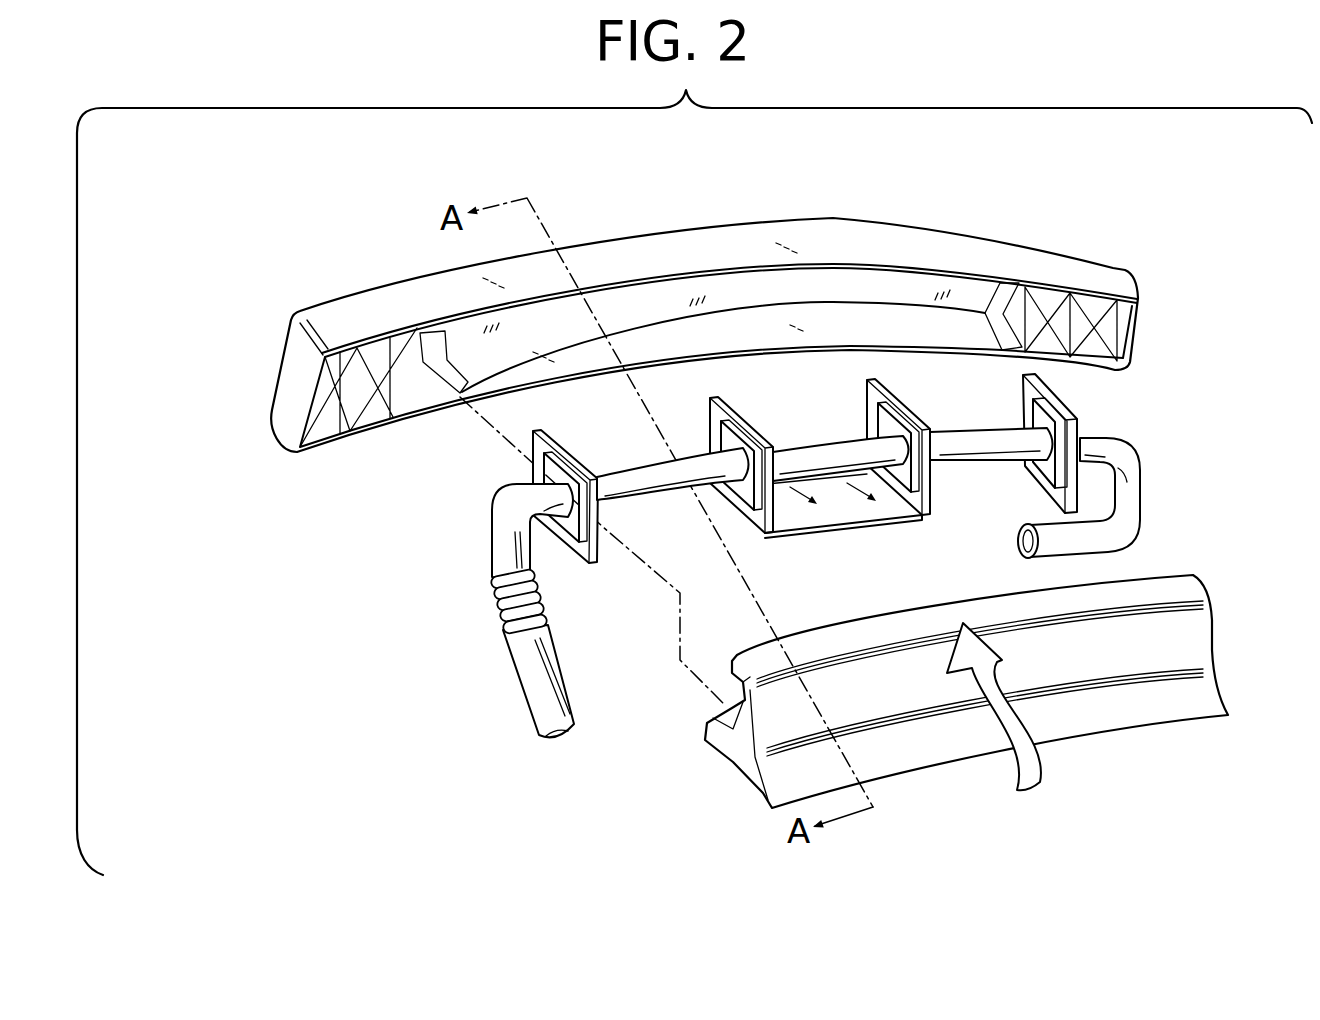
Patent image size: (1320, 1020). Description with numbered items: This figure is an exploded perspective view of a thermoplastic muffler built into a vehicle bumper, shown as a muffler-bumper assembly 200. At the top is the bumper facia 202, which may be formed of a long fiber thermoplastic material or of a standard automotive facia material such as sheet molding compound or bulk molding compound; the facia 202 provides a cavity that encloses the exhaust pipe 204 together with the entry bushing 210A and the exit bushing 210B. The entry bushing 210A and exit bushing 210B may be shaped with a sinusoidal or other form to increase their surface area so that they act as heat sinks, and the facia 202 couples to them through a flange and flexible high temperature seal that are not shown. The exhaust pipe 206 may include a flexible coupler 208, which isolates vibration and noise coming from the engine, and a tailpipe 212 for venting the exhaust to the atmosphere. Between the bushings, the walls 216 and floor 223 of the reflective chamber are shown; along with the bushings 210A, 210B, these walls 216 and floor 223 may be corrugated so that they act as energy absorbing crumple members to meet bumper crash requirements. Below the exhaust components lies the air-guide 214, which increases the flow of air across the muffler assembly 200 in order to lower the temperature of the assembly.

The muffler-bumper assembly 200 is at (713, 497).
The bumper facia 202 is at (735, 246).
The exhaust pipe 204 is at (488, 522).
The exhaust pipe 206 is at (530, 695).
The flexible coupler 208 is at (492, 598).
The entry bushing 210A is at (599, 563).
The exit bushing 210B is at (1060, 408).
The tailpipe 212 is at (1125, 492).
The air-guide 214 is at (1192, 648).
The walls of the reflective chamber 216 is at (873, 395).
The floor of the reflective chamber 223 is at (823, 512).